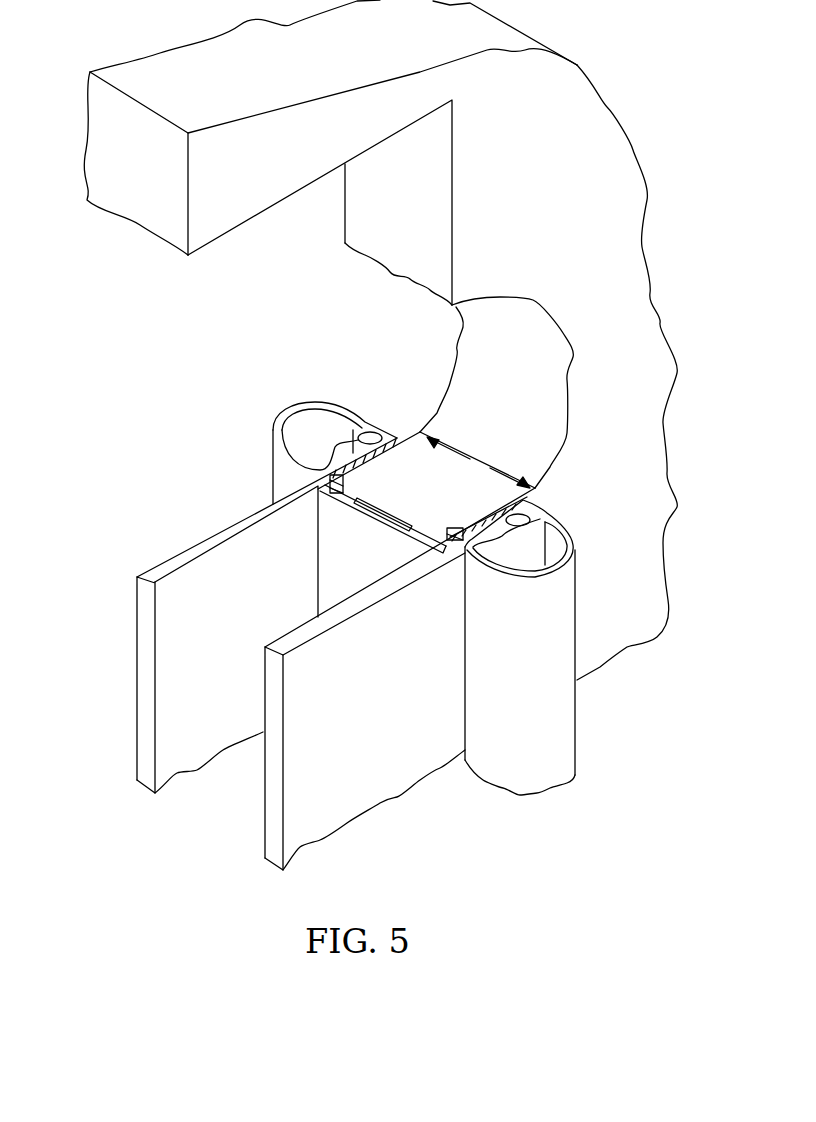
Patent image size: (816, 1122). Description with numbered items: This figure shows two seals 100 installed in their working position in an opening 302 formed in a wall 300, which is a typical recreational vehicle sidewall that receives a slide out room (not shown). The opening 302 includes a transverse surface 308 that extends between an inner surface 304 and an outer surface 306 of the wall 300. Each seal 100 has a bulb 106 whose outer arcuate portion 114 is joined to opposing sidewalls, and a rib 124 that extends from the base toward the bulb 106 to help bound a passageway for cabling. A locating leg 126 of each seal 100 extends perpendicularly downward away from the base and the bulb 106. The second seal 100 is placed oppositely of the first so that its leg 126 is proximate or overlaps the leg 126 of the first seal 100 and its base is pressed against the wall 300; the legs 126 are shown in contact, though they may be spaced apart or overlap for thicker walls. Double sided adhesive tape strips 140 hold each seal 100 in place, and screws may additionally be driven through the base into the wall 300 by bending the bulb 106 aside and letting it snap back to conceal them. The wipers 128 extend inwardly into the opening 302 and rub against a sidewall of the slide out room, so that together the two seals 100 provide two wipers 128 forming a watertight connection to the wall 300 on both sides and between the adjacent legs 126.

The seal 100 is at (351, 643).
The bulb 106 is at (402, 591).
The outer arcuate portion 114 is at (522, 797).
The rib 124 is at (342, 437).
The locating leg 126 is at (327, 493).
The wiper 128 is at (221, 605).
The adhesive tape 140 is at (372, 462).
The wall 300 is at (398, 340).
The opening 302 is at (431, 374).
The inner surface 304 is at (345, 228).
The outer surface 306 is at (652, 292).
The transverse surface 308 is at (375, 265).